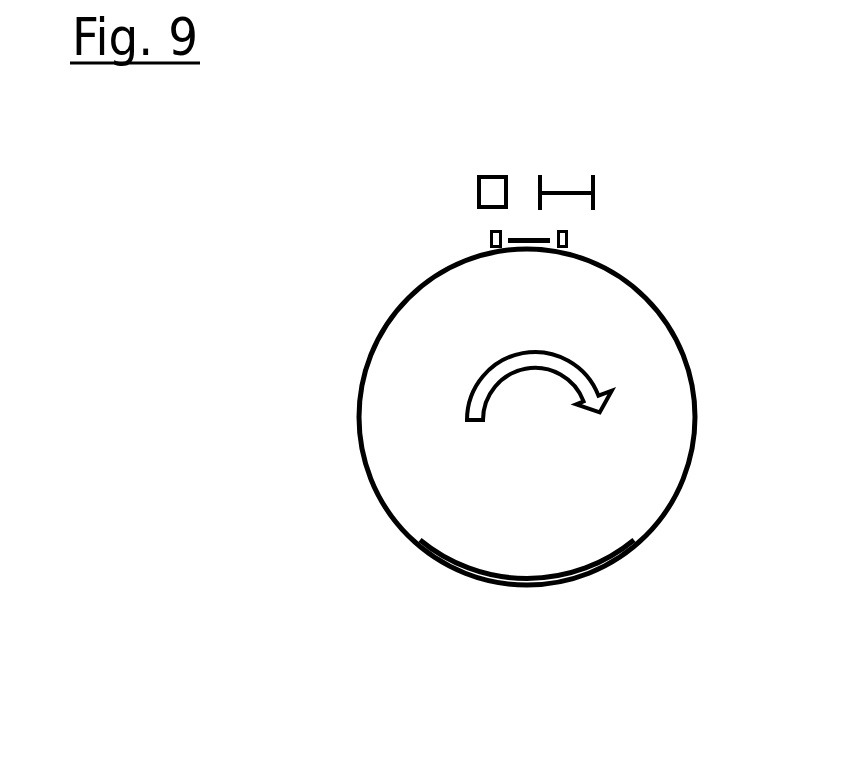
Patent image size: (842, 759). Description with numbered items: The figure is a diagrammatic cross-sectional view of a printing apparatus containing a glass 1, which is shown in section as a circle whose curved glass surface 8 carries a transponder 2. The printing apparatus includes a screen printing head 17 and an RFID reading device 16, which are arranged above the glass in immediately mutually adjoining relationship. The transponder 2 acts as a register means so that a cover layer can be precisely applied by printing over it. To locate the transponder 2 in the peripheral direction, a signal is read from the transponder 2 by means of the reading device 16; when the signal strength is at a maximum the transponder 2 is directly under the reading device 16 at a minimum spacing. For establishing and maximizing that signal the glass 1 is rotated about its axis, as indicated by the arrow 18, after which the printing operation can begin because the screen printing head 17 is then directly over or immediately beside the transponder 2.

The glass 1 is at (580, 582).
The transponder 2 is at (527, 248).
The glass surface 8 is at (476, 580).
The RFID reading device 16 is at (490, 192).
The screen printing head 17 is at (567, 193).
The arrow 18 is at (465, 397).